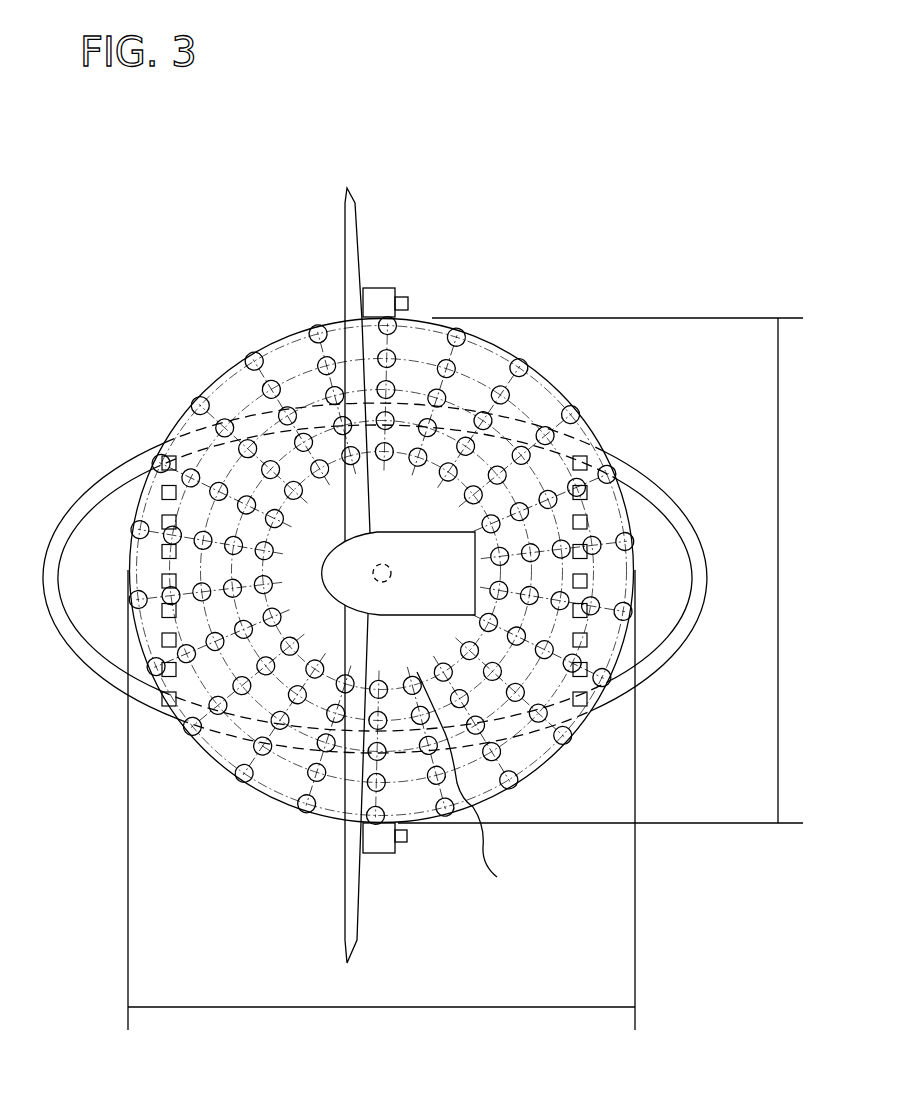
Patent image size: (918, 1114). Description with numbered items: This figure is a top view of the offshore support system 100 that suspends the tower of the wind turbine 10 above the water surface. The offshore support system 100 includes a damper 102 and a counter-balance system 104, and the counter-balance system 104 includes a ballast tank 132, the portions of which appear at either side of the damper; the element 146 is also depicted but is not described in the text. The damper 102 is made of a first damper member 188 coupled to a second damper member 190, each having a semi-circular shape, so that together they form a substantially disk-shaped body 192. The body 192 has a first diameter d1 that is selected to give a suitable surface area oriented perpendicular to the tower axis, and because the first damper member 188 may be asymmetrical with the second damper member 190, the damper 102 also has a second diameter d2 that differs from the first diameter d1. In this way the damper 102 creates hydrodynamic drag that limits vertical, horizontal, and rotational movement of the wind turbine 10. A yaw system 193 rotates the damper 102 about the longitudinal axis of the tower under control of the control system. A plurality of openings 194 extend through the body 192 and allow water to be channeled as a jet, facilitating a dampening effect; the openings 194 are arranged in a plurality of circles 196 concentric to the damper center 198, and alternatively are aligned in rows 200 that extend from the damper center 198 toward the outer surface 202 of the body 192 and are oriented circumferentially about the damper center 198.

The wind turbine 10 is at (404, 224).
The offshore support system 100 is at (611, 234).
The damper 102 is at (545, 768).
The counter-balance system 104 is at (672, 697).
The ballast tank 132 is at (658, 487).
The ring segment 146 is at (120, 480).
The first damper member 188 is at (270, 347).
The second damper member 190 is at (500, 328).
The disk-shaped body 192 is at (594, 375).
The yaw system 193 is at (382, 288).
The openings 194 is at (508, 393).
The circles 196 is at (325, 690).
The damper center 198 is at (382, 563).
The rows 200 is at (470, 788).
The outer surface 202 is at (598, 445).
The first diameter d1 is at (778, 556).
The second diameter d2 is at (405, 1007).